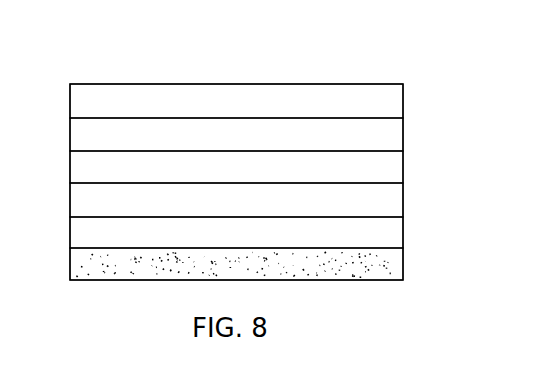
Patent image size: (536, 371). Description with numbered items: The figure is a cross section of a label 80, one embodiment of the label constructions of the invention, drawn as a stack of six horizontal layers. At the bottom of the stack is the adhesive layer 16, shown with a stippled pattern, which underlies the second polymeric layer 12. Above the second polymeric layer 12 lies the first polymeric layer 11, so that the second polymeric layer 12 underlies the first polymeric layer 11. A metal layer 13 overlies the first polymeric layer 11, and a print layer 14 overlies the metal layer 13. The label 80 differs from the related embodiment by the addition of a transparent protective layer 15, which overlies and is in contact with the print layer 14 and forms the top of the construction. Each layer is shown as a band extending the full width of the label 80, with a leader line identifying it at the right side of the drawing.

The label 80 is at (138, 52).
The transparent protective layer 15 is at (383, 93).
The print layer 14 is at (381, 138).
The metal layer 13 is at (382, 171).
The first polymeric layer 11 is at (390, 195).
The second polymeric layer 12 is at (390, 226).
The adhesive layer 16 is at (395, 268).